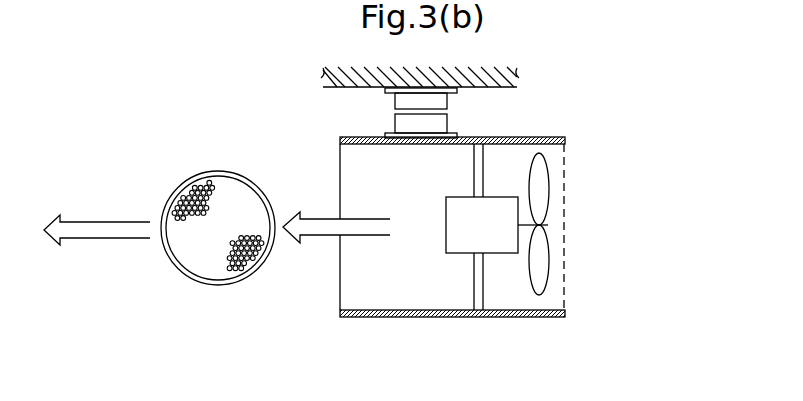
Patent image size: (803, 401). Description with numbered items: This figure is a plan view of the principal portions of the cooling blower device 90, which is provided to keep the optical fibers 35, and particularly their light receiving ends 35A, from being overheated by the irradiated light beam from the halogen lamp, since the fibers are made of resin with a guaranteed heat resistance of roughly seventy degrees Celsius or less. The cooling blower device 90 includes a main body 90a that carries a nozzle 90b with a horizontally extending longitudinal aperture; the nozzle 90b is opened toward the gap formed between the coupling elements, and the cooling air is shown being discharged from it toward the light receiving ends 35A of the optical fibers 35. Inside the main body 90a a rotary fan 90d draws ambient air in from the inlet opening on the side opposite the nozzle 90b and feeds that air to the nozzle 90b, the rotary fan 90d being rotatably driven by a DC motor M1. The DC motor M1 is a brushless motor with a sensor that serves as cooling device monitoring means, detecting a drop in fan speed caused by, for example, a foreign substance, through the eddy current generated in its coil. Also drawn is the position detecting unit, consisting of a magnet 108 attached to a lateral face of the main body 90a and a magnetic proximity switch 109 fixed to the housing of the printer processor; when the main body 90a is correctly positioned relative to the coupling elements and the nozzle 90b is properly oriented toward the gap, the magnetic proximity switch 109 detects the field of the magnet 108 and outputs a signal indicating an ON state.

The optical fibers 35 is at (170, 197).
The light receiving ends 35A is at (205, 247).
The cooling blower device 90 is at (449, 202).
The main body 90a is at (512, 316).
The nozzle 90b is at (355, 267).
The rotary fan 90d is at (565, 137).
The magnet 108 is at (443, 118).
The magnetic proximity switch 109 is at (396, 102).
The DC motor M1 is at (446, 224).